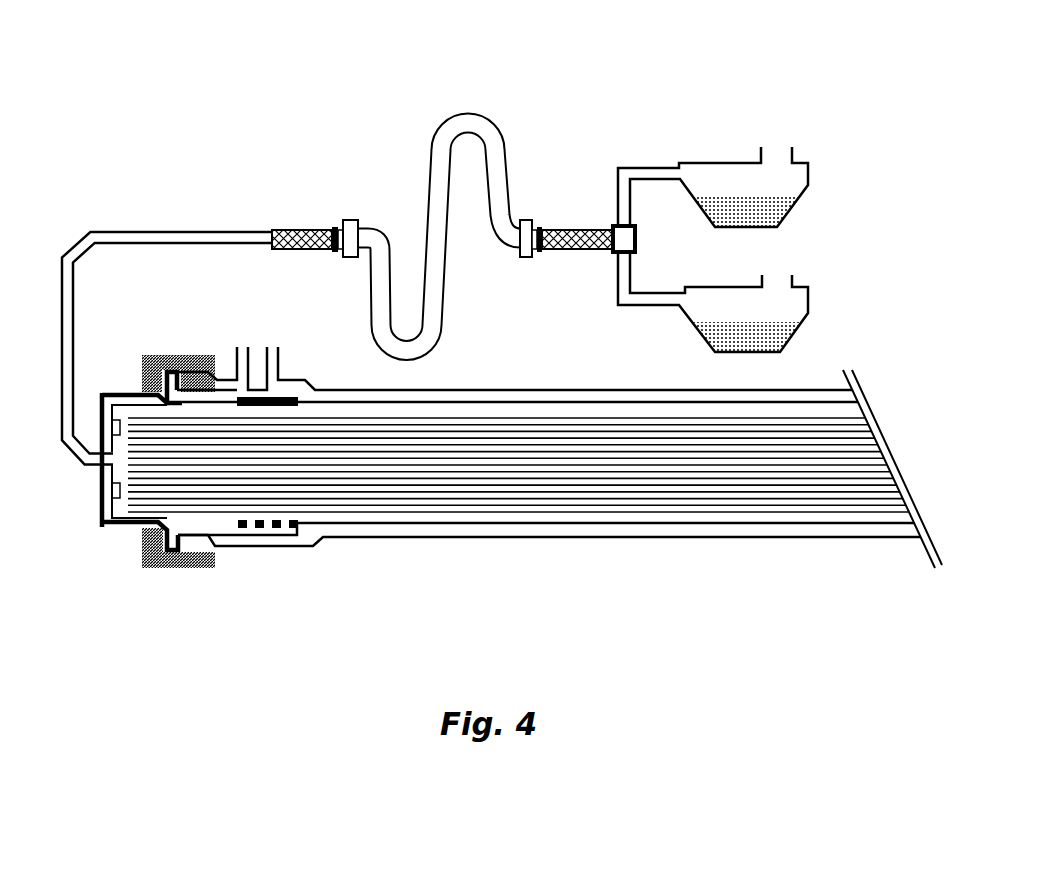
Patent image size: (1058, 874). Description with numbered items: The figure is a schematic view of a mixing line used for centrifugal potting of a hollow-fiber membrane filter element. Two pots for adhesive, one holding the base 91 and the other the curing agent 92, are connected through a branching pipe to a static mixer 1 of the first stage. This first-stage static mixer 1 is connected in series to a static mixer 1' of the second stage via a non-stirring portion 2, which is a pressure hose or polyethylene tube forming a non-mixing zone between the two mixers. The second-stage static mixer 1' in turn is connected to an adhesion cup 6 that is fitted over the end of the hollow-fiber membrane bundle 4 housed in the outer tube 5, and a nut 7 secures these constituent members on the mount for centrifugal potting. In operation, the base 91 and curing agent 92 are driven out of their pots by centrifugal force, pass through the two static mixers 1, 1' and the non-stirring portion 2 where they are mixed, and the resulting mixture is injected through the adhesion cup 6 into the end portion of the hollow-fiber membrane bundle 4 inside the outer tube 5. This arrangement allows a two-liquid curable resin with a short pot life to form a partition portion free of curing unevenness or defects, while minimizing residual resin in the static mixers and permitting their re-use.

The static mixer 1 is at (596, 161).
The static mixer 1' is at (341, 160).
The non-stirring portion 2 is at (469, 108).
The hollow-fiber membrane bundle 4 is at (376, 489).
The outer tube 5 is at (623, 540).
The adhesion cup 6 is at (114, 390).
The nut 7 is at (176, 574).
The base 91 is at (764, 190).
The curing agent 92 is at (769, 318).